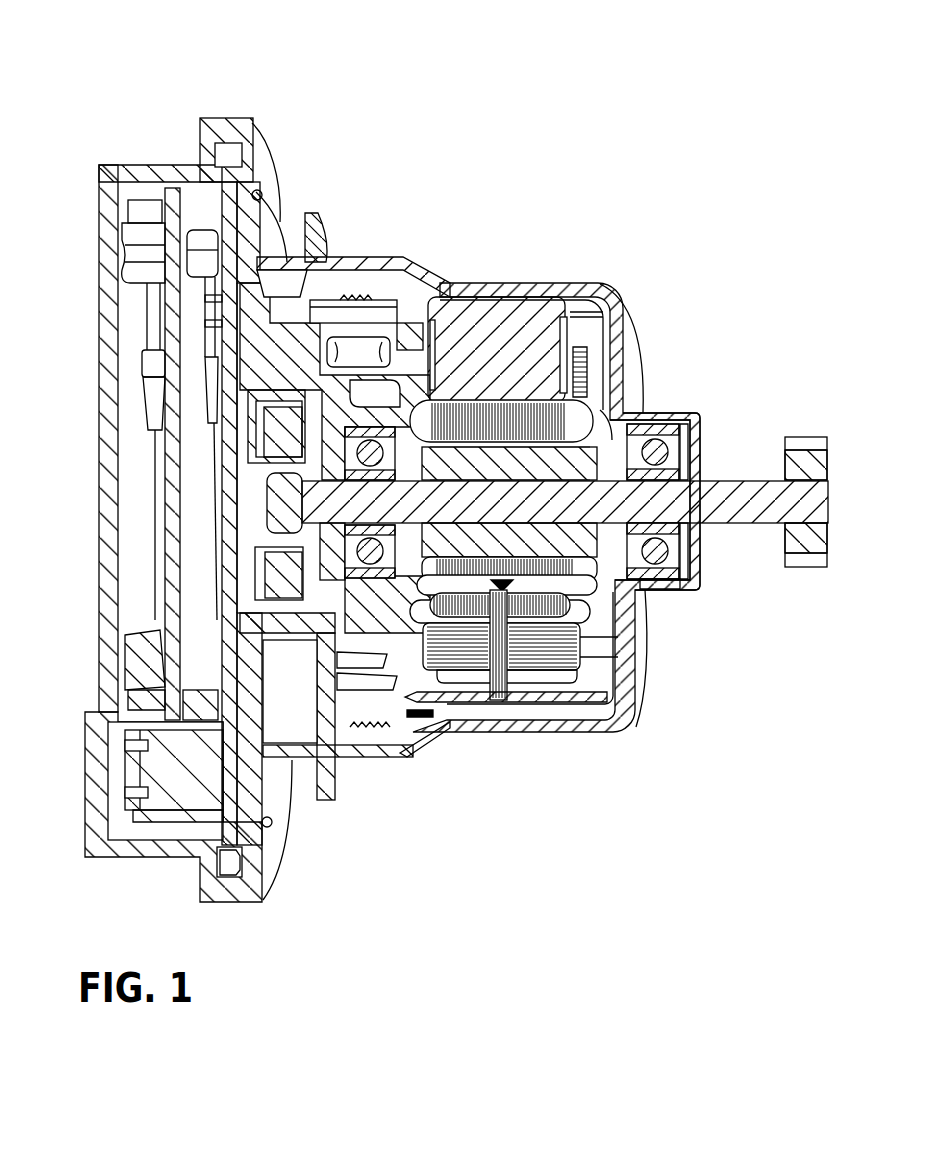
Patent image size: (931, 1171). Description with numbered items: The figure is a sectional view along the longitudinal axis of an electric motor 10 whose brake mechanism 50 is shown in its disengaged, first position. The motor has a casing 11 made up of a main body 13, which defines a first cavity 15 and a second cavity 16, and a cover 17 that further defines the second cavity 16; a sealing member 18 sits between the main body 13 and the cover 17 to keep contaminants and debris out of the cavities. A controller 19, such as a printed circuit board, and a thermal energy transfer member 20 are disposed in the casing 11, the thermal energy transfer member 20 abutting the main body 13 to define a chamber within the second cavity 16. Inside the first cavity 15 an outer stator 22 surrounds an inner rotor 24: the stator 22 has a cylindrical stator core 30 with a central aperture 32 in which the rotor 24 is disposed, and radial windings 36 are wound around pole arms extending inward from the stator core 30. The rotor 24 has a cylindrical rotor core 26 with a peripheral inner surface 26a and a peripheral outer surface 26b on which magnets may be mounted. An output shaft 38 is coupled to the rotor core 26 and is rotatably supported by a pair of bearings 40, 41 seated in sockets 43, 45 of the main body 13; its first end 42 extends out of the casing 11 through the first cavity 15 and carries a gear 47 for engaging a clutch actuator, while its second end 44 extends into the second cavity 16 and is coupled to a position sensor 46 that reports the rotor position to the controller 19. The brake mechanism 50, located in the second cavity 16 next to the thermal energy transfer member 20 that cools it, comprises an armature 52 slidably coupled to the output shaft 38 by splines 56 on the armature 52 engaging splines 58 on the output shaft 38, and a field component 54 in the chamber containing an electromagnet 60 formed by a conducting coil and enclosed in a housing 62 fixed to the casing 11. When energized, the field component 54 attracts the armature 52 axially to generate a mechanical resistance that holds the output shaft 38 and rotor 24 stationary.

The electric motor 10 is at (130, 70).
The casing 11 is at (212, 105).
The main body 13 is at (512, 280).
The first cavity 15 is at (597, 297).
The second cavity 16 is at (132, 195).
The cover 17 is at (107, 165).
The sealing member 18 is at (231, 158).
The controller 19 is at (175, 190).
The thermal energy transfer member 20 is at (235, 205).
The stator 22 is at (604, 345).
The rotor 24 is at (612, 433).
The rotor core 26 is at (610, 548).
The peripheral inner surface 26a is at (556, 515).
The peripheral outer surface 26b is at (585, 580).
The stator core 30 is at (468, 310).
The central aperture 32 is at (482, 402).
The radial windings 36 is at (528, 426).
The output shaft 38 is at (622, 500).
The bearing 40 is at (682, 583).
The bearing 41 is at (390, 437).
The first end 42 is at (733, 503).
The socket 43 is at (667, 580).
The second end 44 is at (277, 512).
The socket 45 is at (383, 430).
The position sensor 46 is at (278, 522).
The gear 47 is at (807, 437).
The brake mechanism 50 is at (313, 376).
The armature 52 is at (330, 400).
The field component 54 is at (280, 376).
The splines 56 is at (283, 458).
The splines 58 is at (290, 478).
The electromagnet 60 is at (322, 600).
The housing 62 is at (283, 612).